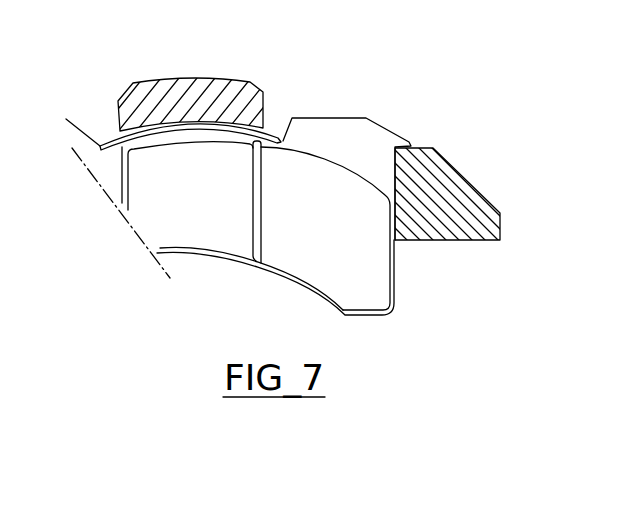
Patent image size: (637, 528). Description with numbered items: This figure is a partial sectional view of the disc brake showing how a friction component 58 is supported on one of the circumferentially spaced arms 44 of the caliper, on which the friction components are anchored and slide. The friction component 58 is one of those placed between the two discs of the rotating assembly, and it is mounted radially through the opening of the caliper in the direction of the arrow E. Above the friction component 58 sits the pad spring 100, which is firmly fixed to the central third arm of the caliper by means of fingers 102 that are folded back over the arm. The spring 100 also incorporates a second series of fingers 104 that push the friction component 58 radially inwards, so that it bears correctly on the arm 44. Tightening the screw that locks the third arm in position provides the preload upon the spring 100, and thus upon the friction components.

The pad spring 100 is at (272, 137).
The fingers 102 is at (126, 90).
The second series of fingers 104 is at (105, 139).
The friction component 58 is at (363, 143).
The arm 44 is at (448, 178).
The arrow E is at (382, 68).